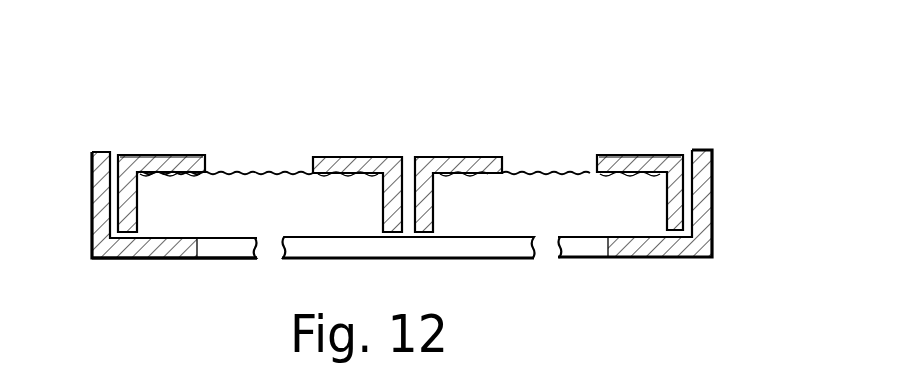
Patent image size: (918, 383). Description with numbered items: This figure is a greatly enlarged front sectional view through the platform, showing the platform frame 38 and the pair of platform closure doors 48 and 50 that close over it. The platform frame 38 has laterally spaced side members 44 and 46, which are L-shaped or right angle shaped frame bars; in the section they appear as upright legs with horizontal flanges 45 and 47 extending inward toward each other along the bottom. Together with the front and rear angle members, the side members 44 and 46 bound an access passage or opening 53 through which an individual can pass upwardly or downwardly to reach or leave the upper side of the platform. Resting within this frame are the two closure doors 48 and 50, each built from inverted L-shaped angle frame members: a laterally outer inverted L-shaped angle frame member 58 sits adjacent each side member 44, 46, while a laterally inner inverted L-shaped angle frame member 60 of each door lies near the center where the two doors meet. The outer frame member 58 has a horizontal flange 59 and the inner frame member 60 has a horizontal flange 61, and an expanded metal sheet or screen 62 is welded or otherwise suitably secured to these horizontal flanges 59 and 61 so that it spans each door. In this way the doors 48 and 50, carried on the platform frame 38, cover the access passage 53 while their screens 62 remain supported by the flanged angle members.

The platform frame 38 is at (115, 271).
The side member 44 is at (90, 242).
The horizontal flange 45 is at (173, 259).
The side member 46 is at (682, 231).
The horizontal flange 47 is at (650, 259).
The platform closure door 48 is at (363, 158).
The platform closure door 50 is at (682, 163).
The access passage 53 is at (578, 259).
The laterally outer inverted L-shaped angle frame member 58 is at (122, 197).
The horizontal flange 59 is at (178, 156).
The laterally inner inverted L-shaped angle frame member 60 is at (382, 155).
The horizontal flange 61 is at (617, 154).
The expanded metal sheet 62 is at (226, 171).